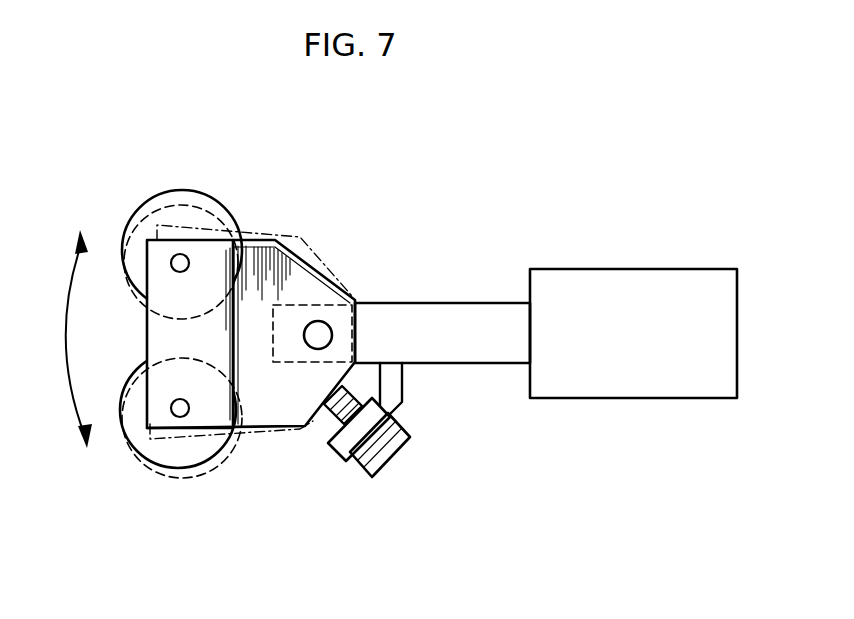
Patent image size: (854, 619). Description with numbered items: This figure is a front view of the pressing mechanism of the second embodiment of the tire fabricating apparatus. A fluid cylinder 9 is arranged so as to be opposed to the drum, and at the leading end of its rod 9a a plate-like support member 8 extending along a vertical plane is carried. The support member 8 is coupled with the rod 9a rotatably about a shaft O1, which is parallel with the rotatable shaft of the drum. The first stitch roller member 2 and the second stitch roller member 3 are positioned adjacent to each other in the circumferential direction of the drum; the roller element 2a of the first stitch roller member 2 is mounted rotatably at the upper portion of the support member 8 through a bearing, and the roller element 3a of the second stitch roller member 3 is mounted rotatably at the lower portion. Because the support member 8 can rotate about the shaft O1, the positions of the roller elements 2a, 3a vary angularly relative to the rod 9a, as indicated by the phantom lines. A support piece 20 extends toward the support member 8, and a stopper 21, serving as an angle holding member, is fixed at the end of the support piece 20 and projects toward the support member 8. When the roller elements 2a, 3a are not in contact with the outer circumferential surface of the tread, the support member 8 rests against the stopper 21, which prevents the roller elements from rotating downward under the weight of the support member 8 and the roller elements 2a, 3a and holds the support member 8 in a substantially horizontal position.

The first stitch roller member 2 is at (148, 182).
The first roller element 2a is at (189, 202).
The second stitch roller member 3 is at (184, 500).
The second roller element 3a is at (196, 456).
The support member 8 is at (262, 240).
The shaft O1 is at (318, 333).
The rod 9a is at (445, 312).
The fluid cylinder 9 is at (613, 278).
The support piece 20 is at (390, 402).
The stopper 21 is at (322, 412).